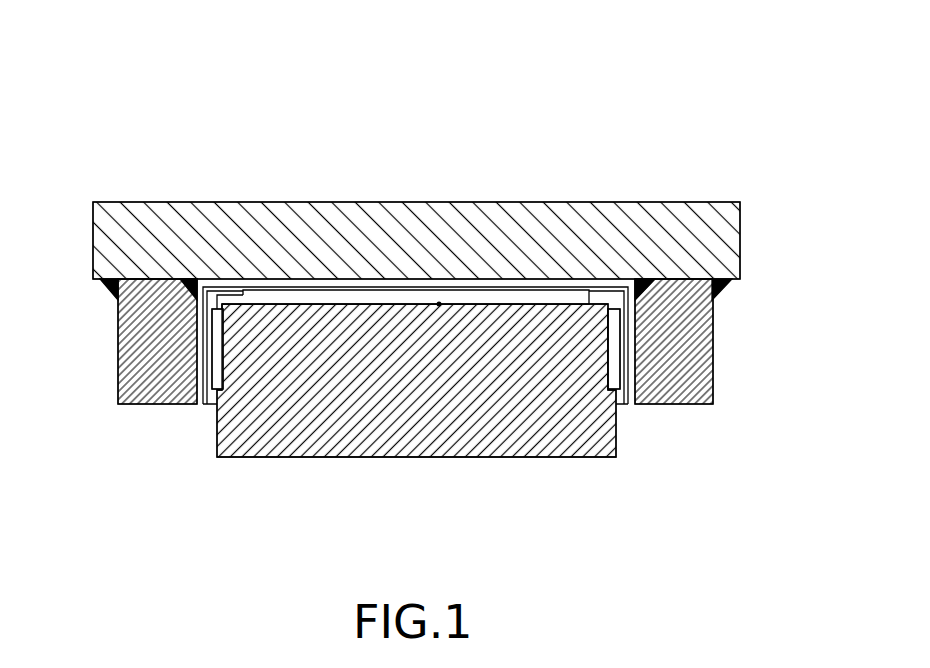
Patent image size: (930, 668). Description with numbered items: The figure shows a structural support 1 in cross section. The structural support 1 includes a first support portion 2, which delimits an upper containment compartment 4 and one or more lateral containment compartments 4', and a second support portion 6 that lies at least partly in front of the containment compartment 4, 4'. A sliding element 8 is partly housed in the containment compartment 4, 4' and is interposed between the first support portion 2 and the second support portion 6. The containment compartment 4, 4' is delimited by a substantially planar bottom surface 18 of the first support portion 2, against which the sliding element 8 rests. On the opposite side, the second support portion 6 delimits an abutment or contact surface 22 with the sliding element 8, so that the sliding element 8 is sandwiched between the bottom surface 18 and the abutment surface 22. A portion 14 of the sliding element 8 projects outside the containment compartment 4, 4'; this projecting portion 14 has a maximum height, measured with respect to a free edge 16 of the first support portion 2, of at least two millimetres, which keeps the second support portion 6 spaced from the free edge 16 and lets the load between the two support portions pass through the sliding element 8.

The structural support 1 is at (133, 80).
The first support portion 2 is at (263, 468).
The upper containment compartment 4 is at (613, 411).
The lateral containment compartment 4' is at (130, 372).
The second support portion 6 is at (746, 227).
The sliding element 8 is at (383, 303).
The projecting portion 14 is at (598, 293).
The free edge 16 is at (230, 291).
The bottom surface 18 is at (439, 302).
The abutment surface 22 is at (486, 289).